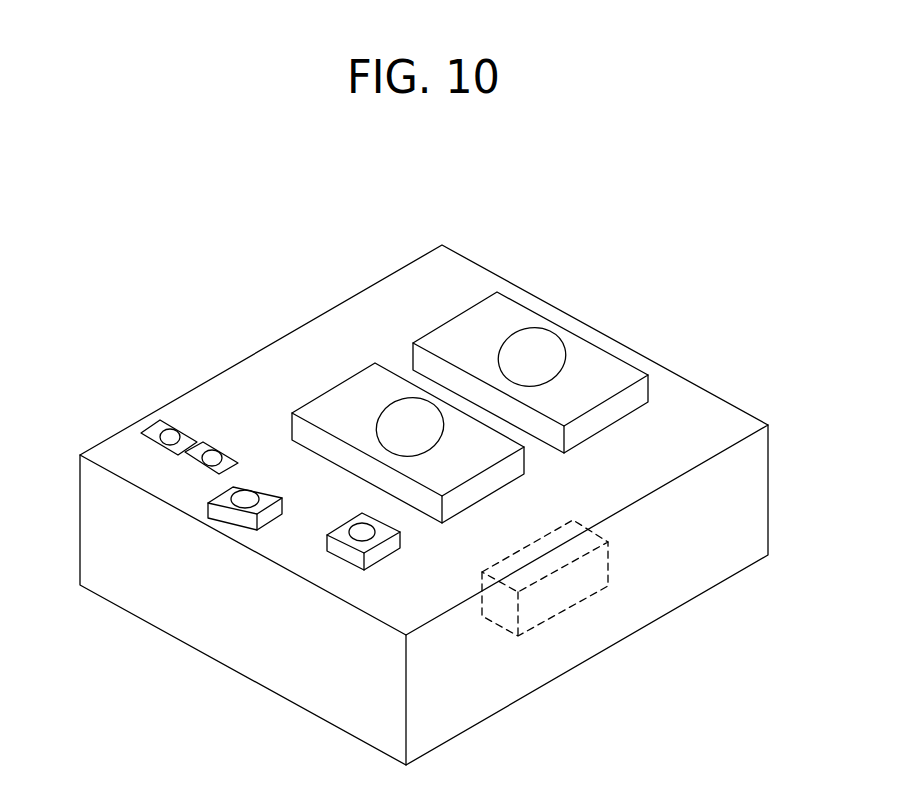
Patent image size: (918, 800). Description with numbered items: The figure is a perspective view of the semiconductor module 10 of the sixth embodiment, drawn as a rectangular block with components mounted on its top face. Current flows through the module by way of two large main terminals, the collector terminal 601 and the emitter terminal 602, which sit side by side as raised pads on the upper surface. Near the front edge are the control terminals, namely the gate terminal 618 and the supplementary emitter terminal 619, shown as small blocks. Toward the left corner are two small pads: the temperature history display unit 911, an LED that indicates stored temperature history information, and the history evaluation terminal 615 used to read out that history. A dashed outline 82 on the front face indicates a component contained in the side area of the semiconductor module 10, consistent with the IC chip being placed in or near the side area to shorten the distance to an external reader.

The semiconductor module 10 is at (690, 418).
The collector terminal 601 is at (577, 353).
The emitter terminal 602 is at (362, 398).
The temperature history display unit 911 is at (170, 428).
The history evaluation terminal 615 is at (212, 450).
The supplementary emitter terminal 619 is at (207, 522).
The gate terminal 618 is at (328, 545).
The connector (hidden) 82 is at (567, 587).